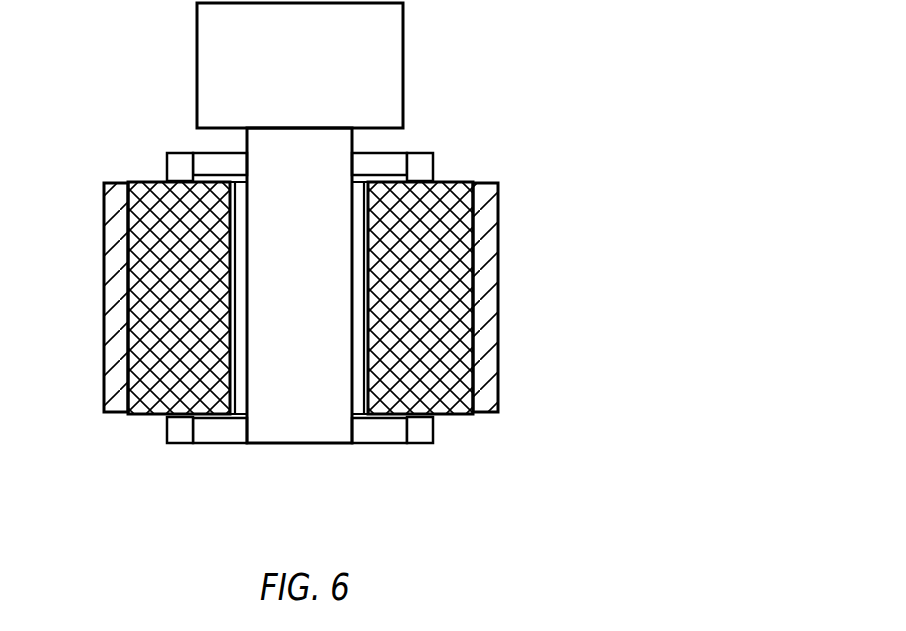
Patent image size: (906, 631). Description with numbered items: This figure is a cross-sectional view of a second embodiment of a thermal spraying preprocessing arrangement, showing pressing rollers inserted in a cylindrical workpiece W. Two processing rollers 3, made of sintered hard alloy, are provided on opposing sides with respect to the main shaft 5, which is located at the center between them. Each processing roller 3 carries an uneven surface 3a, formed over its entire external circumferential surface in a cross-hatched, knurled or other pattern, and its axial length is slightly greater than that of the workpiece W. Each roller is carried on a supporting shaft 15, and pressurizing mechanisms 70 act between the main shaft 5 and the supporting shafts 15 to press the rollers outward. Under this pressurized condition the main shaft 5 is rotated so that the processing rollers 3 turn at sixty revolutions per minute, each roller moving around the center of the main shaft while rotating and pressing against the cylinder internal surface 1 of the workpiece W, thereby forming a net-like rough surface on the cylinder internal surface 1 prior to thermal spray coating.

The cylinder internal surface 1 is at (302, 269).
The processing roller 3 is at (133, 178).
The uneven surface 3a is at (118, 268).
The main shaft 5 is at (300, 433).
The supporting shaft 15 is at (167, 153).
The pressurizing mechanism 70 is at (212, 153).
The workpiece W is at (495, 242).